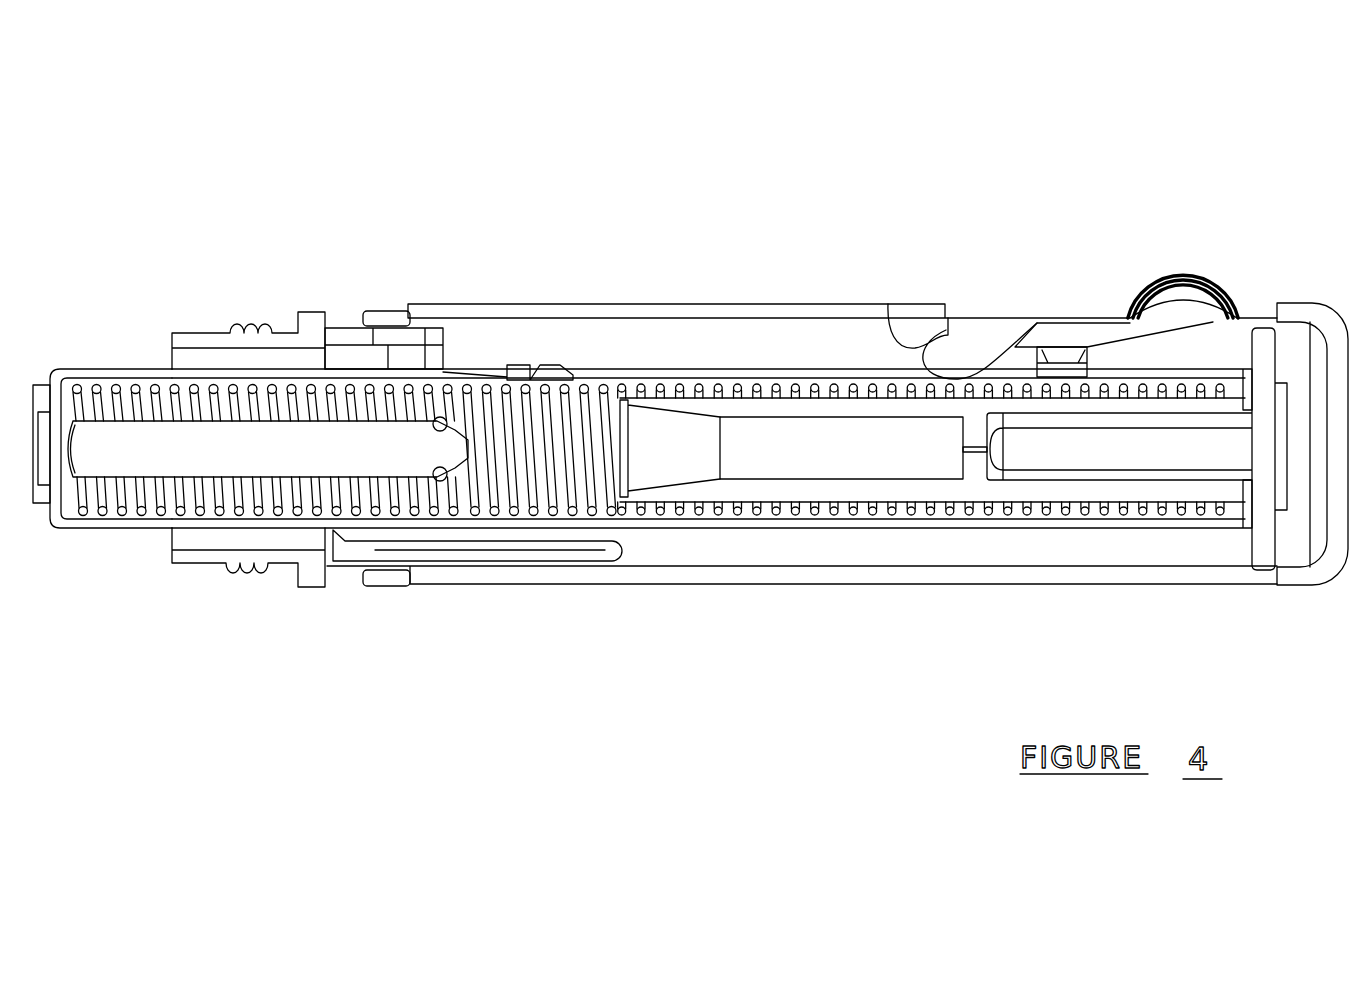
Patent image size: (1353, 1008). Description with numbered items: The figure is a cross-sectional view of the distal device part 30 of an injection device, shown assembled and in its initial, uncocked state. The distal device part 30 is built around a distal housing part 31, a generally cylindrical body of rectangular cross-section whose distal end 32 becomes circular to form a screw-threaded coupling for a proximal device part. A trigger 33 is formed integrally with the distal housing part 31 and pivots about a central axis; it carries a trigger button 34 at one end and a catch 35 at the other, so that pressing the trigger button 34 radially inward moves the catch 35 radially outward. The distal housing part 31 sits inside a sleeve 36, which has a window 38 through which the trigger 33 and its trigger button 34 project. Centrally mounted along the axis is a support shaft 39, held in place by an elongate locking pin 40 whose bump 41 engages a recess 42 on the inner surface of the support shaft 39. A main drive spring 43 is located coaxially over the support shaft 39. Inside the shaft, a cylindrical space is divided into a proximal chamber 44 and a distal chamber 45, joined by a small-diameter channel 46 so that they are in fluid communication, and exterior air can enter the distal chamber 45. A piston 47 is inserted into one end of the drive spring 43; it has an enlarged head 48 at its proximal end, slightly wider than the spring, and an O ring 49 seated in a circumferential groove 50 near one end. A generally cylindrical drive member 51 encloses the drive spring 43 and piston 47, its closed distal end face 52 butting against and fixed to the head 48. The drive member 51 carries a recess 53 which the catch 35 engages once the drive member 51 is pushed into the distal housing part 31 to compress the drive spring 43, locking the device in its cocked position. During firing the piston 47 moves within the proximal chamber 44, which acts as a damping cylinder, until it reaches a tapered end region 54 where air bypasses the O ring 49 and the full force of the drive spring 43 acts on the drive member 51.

The distal device part 30 is at (802, 328).
The distal housing part 31 is at (340, 333).
The distal end 32 is at (203, 334).
The trigger 33 is at (1040, 322).
The trigger button 34 is at (1188, 276).
The catch 35 is at (889, 303).
The sleeve 36 is at (608, 310).
The window 38 is at (1253, 312).
The support shaft 39 is at (900, 487).
The locking pin 40 is at (1196, 464).
The bump 41 is at (1048, 397).
The recess 42 is at (1080, 400).
The main drive spring 43 is at (120, 385).
The proximal chamber 44 is at (848, 467).
The distal chamber 45 is at (1107, 477).
The channel 46 is at (975, 455).
The piston 47 is at (281, 466).
The head 48 is at (73, 386).
The O ring 49 is at (433, 432).
The groove 50 is at (432, 470).
The drive member 51 is at (133, 522).
The distal end face 52 is at (47, 503).
The recess 53 is at (886, 378).
The tapered end region 54 is at (673, 473).